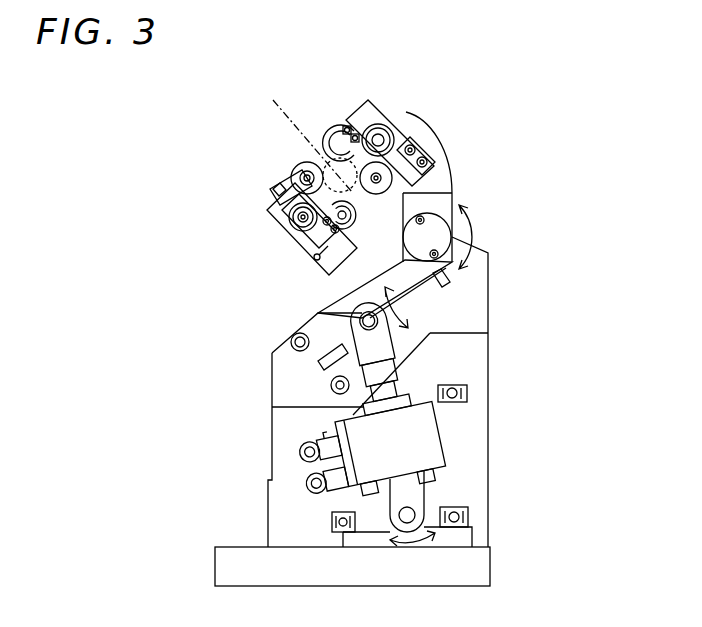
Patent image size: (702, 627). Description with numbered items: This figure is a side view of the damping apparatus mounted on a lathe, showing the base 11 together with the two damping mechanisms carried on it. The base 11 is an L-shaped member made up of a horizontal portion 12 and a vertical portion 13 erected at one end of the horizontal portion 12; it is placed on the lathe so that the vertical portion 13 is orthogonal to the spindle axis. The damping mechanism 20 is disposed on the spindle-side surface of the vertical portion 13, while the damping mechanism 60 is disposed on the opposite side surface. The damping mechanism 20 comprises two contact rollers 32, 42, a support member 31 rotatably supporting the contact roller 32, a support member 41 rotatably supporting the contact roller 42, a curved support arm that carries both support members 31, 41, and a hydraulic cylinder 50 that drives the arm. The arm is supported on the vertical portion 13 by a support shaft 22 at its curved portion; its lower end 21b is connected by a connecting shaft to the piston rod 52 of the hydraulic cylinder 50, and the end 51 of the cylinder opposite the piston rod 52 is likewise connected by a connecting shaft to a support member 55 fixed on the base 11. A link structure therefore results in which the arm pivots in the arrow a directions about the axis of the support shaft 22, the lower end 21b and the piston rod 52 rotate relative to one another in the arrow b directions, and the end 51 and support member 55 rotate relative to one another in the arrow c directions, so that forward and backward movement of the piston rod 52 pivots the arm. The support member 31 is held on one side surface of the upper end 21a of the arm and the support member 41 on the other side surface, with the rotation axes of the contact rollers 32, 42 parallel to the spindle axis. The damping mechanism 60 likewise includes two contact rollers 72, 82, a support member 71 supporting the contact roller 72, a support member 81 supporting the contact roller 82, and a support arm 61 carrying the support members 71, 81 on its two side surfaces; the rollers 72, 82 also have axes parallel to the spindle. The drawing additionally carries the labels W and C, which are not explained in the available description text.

The base 11 is at (214, 465).
The horizontal portion 12 is at (233, 547).
The vertical portion 13 is at (480, 436).
The damping mechanism 20 is at (292, 394).
The upper end of the support arm 21a is at (407, 127).
The lower end of the support arm 21b is at (318, 313).
The support shaft 22 is at (447, 232).
The support member 31 is at (372, 100).
The contact roller 32 is at (331, 129).
The support member 41 is at (410, 147).
The contact roller 42 is at (412, 183).
The hydraulic cylinder 50 is at (371, 453).
The end of the hydraulic cylinder 51 is at (413, 503).
The piston rod 52 is at (376, 356).
The support member 55 is at (468, 537).
The damping mechanism 60 is at (232, 262).
The support arm 61 is at (333, 270).
The support member 71 is at (291, 178).
The contact roller 72 is at (296, 166).
The support member 81 is at (315, 243).
The contact roller 82 is at (315, 221).
The wire workpiece W is at (306, 137).
The bending section C is at (483, 111).